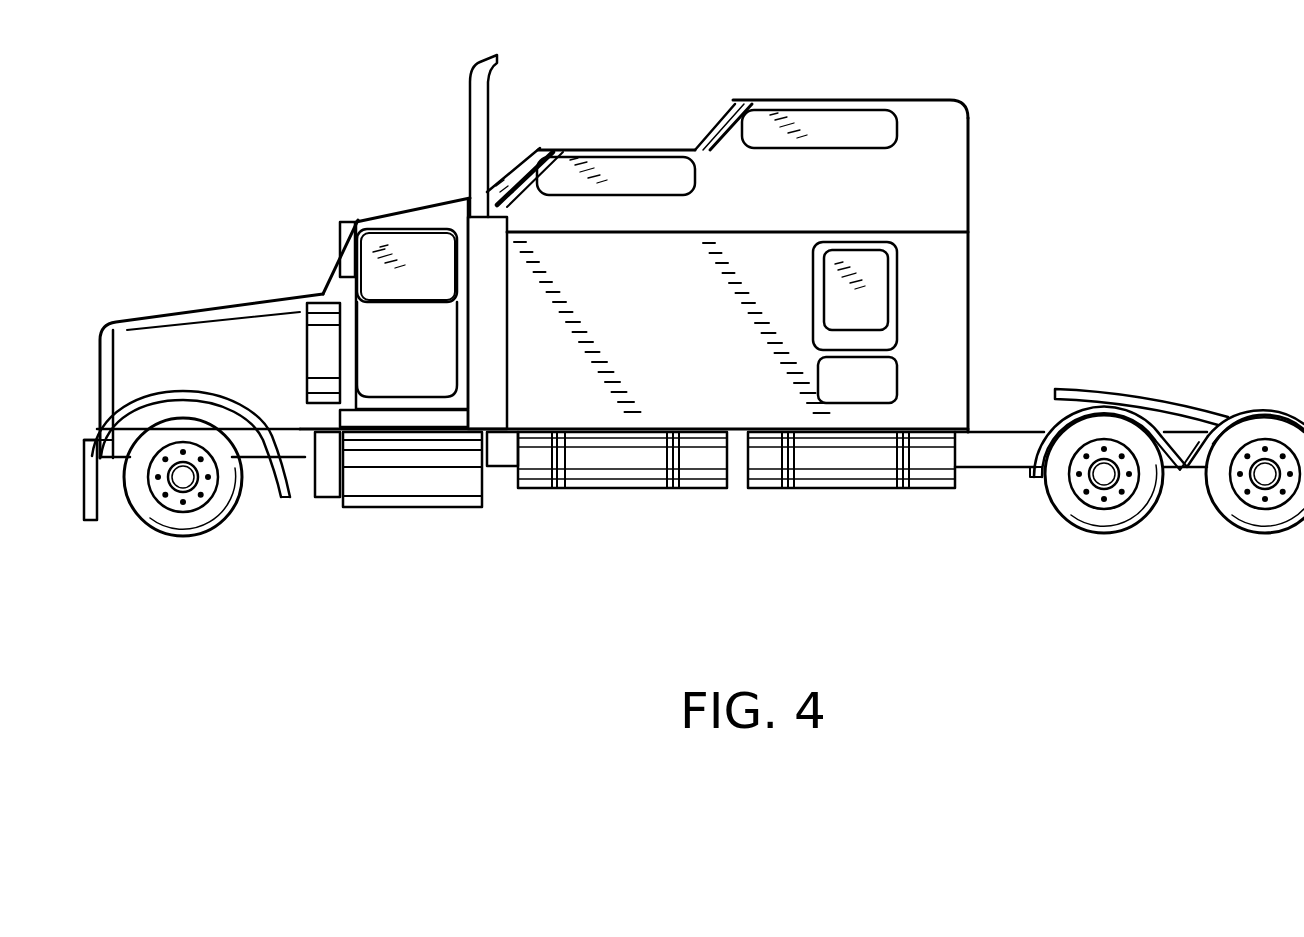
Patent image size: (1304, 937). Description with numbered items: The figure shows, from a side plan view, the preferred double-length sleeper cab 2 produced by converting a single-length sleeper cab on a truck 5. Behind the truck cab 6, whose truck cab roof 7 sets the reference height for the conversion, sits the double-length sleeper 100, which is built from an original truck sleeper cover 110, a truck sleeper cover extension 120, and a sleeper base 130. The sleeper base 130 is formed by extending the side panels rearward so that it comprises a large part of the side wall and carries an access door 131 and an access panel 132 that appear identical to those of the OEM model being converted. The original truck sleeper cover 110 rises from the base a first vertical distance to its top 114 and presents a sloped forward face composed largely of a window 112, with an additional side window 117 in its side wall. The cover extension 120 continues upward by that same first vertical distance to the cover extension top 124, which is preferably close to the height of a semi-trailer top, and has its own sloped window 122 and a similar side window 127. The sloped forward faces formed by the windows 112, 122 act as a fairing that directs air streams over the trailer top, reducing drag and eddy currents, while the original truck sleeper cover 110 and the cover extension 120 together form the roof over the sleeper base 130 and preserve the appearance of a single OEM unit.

The double-length sleeper cab 2 is at (328, 96).
The truck 5 is at (250, 297).
The truck cab 6 is at (460, 210).
The truck cab roof 7 is at (397, 208).
The double-length sleeper 100 is at (995, 169).
The original truck sleeper cover 110 is at (630, 138).
The window 112 is at (512, 170).
The top of original truck sleeper cover 114 is at (597, 148).
The side window 117 is at (656, 167).
The truck sleeper cover extension 120 is at (971, 118).
The window 122 is at (722, 118).
The cover extension top 124 is at (787, 100).
The side window 127 is at (825, 125).
The sleeper base 130 is at (971, 254).
The access door 131 is at (877, 312).
The access panel 132 is at (886, 390).